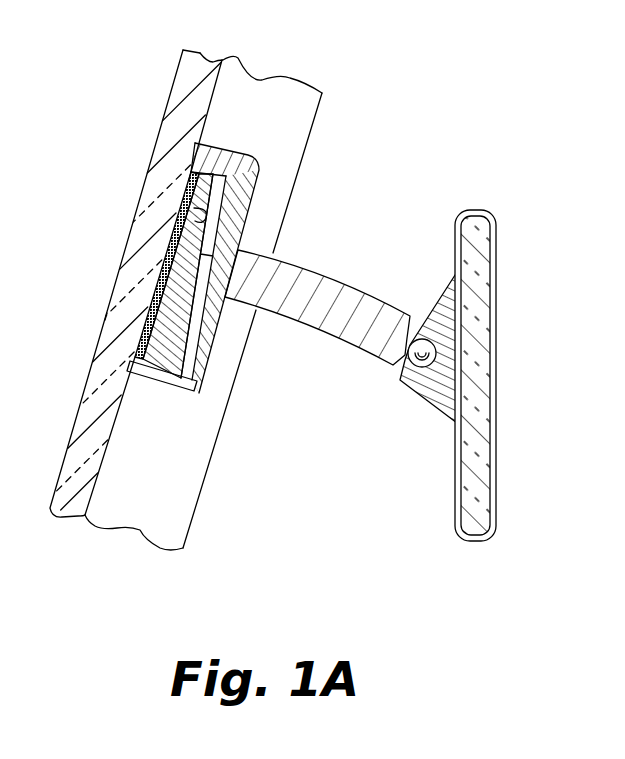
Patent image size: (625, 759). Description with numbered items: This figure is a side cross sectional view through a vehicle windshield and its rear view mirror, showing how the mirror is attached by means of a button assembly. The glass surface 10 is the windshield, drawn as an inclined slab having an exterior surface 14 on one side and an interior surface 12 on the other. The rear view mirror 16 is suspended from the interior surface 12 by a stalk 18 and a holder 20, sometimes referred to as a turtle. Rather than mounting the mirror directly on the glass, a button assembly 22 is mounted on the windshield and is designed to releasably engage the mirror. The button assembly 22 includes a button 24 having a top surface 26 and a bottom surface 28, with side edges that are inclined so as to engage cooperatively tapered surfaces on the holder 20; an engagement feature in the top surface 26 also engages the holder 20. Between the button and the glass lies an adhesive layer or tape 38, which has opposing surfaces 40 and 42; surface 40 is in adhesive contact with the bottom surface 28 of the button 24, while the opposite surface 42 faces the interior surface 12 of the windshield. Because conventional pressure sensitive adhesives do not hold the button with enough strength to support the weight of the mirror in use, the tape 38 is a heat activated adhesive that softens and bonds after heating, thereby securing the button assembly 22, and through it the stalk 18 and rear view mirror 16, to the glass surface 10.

The glass surface 10 is at (262, 72).
The interior surface 12 is at (100, 483).
The exterior surface 14 is at (173, 100).
The rear view mirror 16 is at (480, 288).
The stalk 18 is at (378, 310).
The holder 20 is at (262, 170).
The button assembly 22 is at (153, 391).
The button 24 is at (205, 325).
The top surface 26 is at (207, 212).
The bottom surface 28 is at (190, 213).
The adhesive layer or tape 38 is at (147, 268).
The surface of adhesive tape 40 is at (172, 190).
The surface of adhesive tape 42 is at (129, 348).